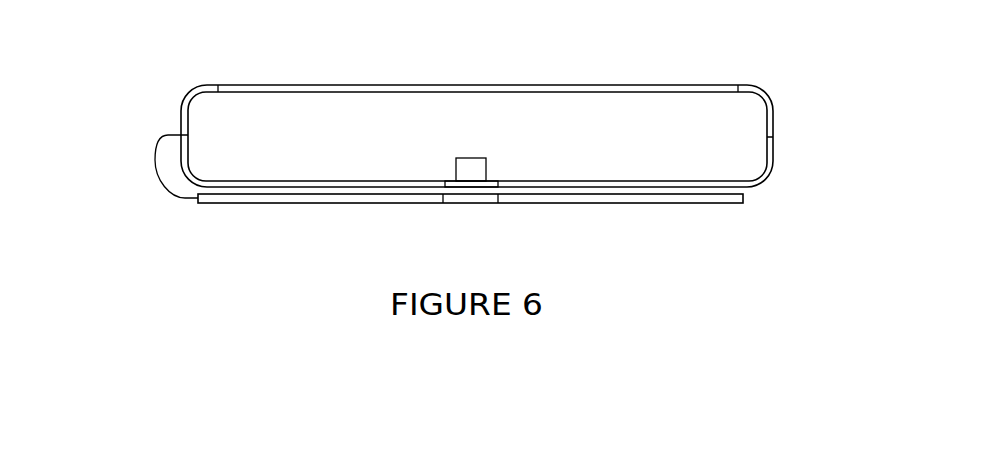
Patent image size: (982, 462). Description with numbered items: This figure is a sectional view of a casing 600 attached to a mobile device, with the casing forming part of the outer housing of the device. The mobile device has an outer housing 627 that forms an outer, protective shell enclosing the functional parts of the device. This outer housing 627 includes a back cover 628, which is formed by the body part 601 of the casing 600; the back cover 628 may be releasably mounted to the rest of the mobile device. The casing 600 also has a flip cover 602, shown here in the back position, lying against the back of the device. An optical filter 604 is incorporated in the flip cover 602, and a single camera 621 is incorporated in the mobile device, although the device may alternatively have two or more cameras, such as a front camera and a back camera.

The casing 600 is at (471, 209).
The body part 601 is at (505, 125).
The flip cover 602 is at (675, 198).
The optical filter 604 is at (453, 198).
The camera 621 is at (470, 175).
The outer housing 627 is at (775, 125).
The back cover 628 is at (755, 183).